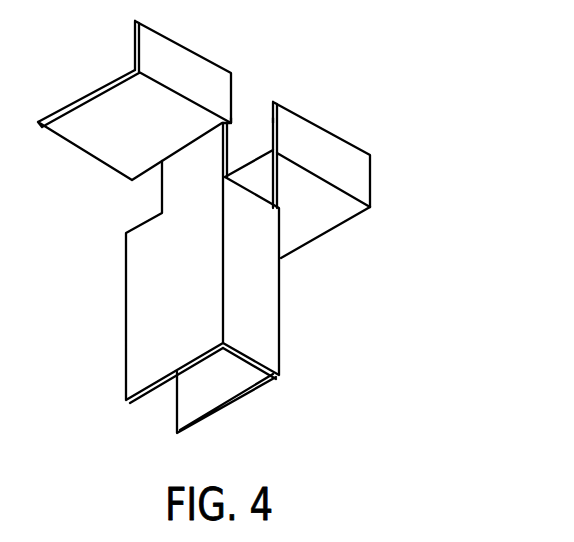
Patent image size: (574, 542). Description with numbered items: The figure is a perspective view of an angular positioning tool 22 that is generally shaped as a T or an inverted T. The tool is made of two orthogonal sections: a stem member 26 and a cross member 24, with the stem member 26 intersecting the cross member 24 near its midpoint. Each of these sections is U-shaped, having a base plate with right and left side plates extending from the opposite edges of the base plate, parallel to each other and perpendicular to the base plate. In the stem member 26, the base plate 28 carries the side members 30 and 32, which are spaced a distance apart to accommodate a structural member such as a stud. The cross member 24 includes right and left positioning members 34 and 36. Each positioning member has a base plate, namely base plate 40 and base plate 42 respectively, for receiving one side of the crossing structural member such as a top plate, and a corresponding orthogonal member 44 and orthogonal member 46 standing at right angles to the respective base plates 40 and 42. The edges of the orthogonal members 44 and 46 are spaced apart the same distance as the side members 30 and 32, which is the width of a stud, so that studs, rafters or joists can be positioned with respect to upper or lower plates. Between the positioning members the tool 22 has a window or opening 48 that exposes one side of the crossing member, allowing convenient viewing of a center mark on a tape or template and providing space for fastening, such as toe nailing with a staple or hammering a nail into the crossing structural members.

The angular positioning tool 22 is at (444, 127).
The cross member 24 is at (384, 185).
The stem member 26 is at (100, 261).
The base plate 28 is at (260, 318).
The side member 30 is at (140, 348).
The side member 32 is at (216, 412).
The right positioning member 34 is at (98, 182).
The left positioning member 36 is at (338, 260).
The base plate 40 is at (68, 127).
The base plate 42 is at (336, 213).
The orthogonal member 44 is at (195, 75).
The orthogonal member 46 is at (332, 150).
The window 48 is at (250, 122).